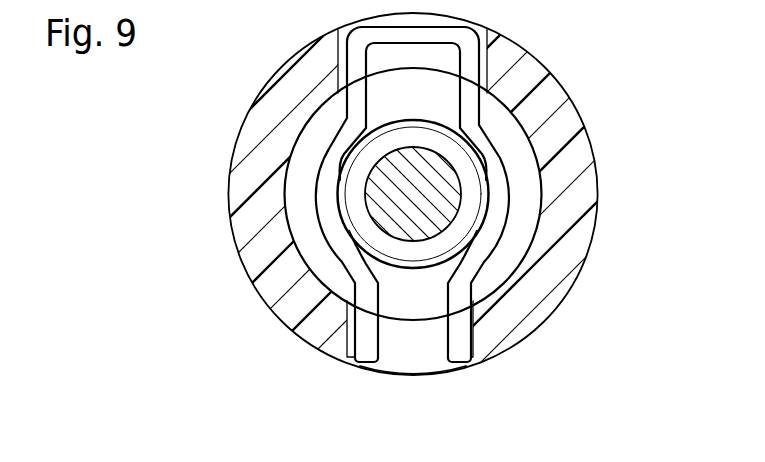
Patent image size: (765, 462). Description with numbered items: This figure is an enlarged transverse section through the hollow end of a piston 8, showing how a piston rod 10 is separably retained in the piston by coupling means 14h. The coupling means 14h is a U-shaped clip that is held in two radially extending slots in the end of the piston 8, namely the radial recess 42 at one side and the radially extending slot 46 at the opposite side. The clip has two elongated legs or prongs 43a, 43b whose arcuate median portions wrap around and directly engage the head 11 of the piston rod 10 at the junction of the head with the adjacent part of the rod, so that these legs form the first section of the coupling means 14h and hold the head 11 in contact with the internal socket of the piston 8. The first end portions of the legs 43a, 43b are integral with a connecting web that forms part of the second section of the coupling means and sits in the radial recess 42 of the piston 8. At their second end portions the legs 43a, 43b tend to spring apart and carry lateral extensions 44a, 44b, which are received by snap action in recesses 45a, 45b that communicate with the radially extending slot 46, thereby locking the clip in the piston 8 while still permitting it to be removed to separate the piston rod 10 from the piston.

The piston 8 is at (578, 205).
The piston rod 10 is at (375, 208).
The head of the piston rod 11 is at (510, 247).
The coupling means 14h is at (513, 100).
The radial recess 42 is at (417, 225).
The first leg of the coupling means 43a is at (330, 165).
The second leg of the coupling means 43b is at (492, 152).
The lateral extension of the first leg 44a is at (357, 367).
The lateral extension of the second leg 44b is at (472, 367).
The first recess 45a is at (350, 340).
The second recess 45b is at (482, 340).
The radially extending slot 46 is at (410, 350).